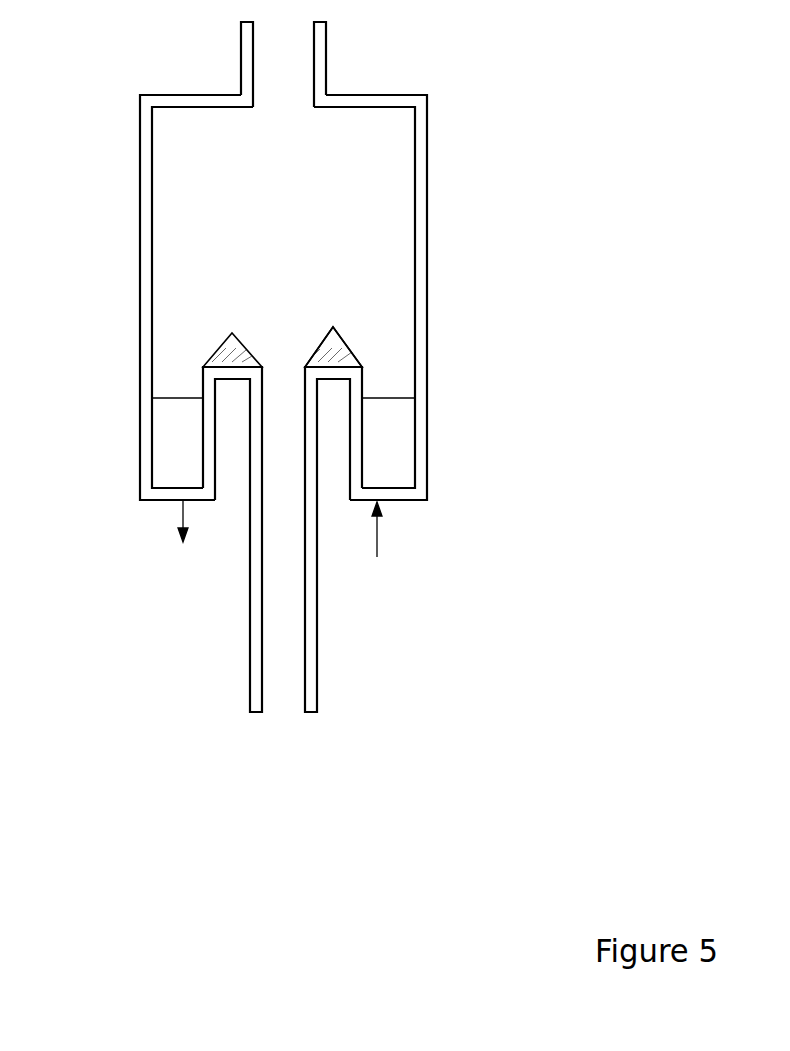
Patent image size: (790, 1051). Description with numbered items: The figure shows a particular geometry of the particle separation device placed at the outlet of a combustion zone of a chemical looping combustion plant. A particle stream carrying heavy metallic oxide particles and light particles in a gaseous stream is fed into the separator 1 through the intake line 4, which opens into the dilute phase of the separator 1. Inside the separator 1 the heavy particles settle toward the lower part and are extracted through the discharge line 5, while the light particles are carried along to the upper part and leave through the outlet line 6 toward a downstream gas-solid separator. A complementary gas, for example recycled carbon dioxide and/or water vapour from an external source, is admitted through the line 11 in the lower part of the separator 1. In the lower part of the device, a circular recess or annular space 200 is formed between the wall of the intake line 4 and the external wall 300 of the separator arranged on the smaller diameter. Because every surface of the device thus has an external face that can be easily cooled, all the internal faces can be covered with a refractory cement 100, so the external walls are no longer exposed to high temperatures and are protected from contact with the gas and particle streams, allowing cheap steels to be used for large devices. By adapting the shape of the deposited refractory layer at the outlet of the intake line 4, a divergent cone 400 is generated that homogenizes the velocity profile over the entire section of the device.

The separator 1 is at (430, 267).
The intake line 4 is at (290, 388).
The discharge line 5 is at (178, 520).
The outlet line 6 is at (327, 25).
The line 11 is at (378, 548).
The refractory cement 100 is at (343, 347).
The annular space 200 is at (235, 507).
The external wall 300 is at (356, 421).
The divergent cone 400 is at (307, 333).